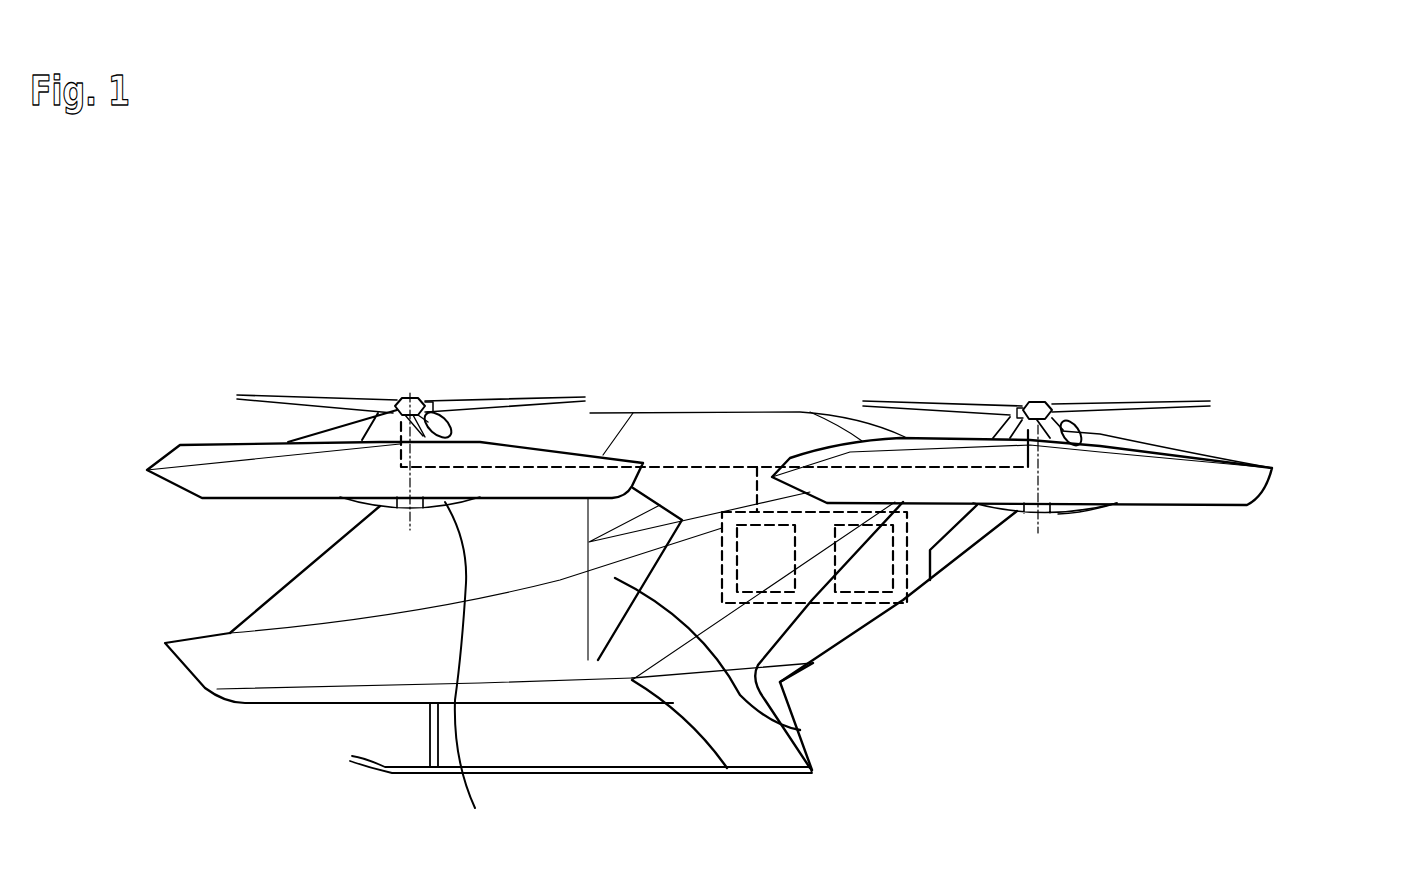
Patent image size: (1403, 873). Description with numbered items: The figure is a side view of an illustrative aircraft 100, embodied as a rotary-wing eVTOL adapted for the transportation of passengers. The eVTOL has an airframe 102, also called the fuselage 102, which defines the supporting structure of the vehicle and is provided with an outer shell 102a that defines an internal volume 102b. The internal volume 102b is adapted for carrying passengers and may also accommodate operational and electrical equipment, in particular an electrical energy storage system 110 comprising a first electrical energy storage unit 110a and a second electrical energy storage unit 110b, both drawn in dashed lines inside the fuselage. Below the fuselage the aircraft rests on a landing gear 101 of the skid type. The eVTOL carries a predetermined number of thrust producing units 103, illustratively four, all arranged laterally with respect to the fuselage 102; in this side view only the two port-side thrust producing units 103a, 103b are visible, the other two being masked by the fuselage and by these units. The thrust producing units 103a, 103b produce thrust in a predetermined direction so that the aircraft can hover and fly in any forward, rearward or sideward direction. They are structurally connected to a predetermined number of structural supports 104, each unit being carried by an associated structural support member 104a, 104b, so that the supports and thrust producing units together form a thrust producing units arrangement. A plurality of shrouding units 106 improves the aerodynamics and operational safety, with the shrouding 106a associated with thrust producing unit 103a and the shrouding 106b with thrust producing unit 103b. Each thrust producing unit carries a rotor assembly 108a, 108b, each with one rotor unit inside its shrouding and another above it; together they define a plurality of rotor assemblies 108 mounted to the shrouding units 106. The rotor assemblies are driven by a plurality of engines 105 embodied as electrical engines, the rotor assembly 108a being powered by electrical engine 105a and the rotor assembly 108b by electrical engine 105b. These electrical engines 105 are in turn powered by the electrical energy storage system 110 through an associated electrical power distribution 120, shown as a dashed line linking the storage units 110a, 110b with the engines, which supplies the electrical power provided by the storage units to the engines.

The aircraft 100 is at (212, 240).
The landing gear 101 is at (676, 797).
The airframe 102 is at (267, 652).
The outer shell 102a is at (800, 730).
The internal volume 102b is at (305, 588).
The thrust producing units 103 is at (1268, 449).
The thrust producing unit 103a is at (305, 420).
The thrust producing unit 103b is at (1168, 431).
The structural supports 104 is at (1027, 545).
The structural support member 104a is at (432, 620).
The structural support member 104b is at (1058, 518).
The plurality of engines 105 is at (918, 431).
The electrical engine 105a is at (468, 427).
The electrical engine 105b is at (972, 425).
The plurality of shrouding units 106 is at (1290, 482).
The shrouding 106a is at (190, 457).
The shrouding 106b is at (1227, 487).
The plurality of rotor assemblies 108 is at (1192, 388).
The rotor assembly 108a is at (350, 402).
The rotor assembly 108b is at (1087, 410).
The electrical energy storage system 110 is at (837, 605).
The first electrical energy storage unit 110a is at (720, 546).
The second electrical energy storage unit 110b is at (903, 552).
The electrical power distribution 120 is at (750, 446).